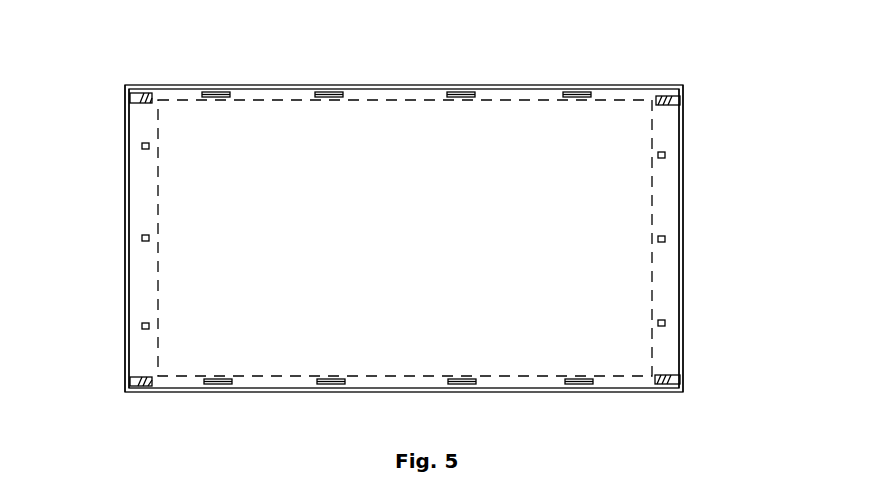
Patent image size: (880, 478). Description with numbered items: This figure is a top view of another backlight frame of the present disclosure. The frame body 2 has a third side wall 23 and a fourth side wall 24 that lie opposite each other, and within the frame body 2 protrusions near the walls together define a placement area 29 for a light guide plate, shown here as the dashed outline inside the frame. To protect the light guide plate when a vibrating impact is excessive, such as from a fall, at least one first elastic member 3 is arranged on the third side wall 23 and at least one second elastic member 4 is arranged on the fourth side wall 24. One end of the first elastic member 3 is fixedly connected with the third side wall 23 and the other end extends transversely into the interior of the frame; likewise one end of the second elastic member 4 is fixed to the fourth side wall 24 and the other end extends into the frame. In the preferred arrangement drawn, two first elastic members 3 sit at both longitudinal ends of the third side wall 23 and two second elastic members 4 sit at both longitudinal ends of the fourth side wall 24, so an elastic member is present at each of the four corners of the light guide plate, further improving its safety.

The frame body 2 is at (425, 85).
The first elastic member 3 is at (140, 97).
The second elastic member 4 is at (685, 93).
The third side wall 23 is at (126, 197).
The fourth side wall 24 is at (683, 212).
The placement area 29 is at (508, 100).